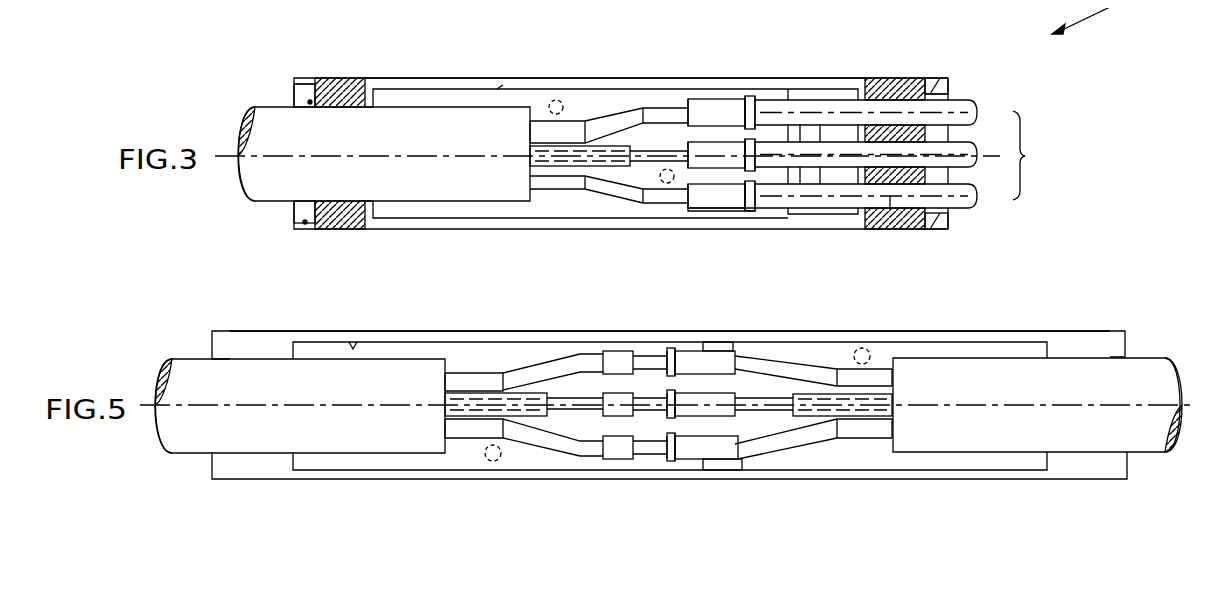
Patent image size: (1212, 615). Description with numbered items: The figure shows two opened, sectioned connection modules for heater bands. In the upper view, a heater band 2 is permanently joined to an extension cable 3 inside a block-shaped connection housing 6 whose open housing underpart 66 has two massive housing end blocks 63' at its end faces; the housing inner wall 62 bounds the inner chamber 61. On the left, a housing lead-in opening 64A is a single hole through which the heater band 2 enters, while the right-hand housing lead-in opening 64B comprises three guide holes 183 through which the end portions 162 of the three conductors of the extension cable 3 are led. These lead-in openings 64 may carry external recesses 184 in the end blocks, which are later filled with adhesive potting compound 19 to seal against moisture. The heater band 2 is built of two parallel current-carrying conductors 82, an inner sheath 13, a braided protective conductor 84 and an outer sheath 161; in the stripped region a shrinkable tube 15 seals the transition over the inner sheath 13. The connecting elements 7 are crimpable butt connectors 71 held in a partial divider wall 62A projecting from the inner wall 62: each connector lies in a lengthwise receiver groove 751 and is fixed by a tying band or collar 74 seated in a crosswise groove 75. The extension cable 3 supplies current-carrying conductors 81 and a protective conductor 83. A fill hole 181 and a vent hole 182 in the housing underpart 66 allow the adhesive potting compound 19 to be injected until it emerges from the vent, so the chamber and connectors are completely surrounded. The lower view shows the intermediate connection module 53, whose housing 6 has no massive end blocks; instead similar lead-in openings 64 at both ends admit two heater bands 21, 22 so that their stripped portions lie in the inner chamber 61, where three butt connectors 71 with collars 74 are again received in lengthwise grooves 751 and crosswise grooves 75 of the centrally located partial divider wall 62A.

In FIG. 3, the heater band 2 is at (410, 178).
In FIG. 3, the extension cable 3 is at (1028, 155).
In FIG. 3, the connection housing 6 is at (495, 230).
In FIG. 5, the connection housing 6 is at (973, 477).
In FIG. 3, the connecting element 7 is at (705, 208).
In FIG. 3, the inner sheath 13 is at (573, 120).
In FIG. 5, the inner sheath 13 is at (880, 378).
In FIG. 3, the shrinkable tube 15 is at (553, 160).
In FIG. 5, the shrinkable tube 15 is at (807, 402).
In FIG. 3, the adhesive potting compound 19 is at (530, 130).
In FIG. 5, the adhesive potting compound 19 is at (470, 355).
In FIG. 5, the heater band 21 is at (345, 425).
In FIG. 5, the heater band 22 is at (1017, 423).
In FIG. 5, the connection module 53 is at (1107, 287).
In FIG. 3, the inner chamber 61 is at (398, 92).
In FIG. 5, the inner chamber 61 is at (508, 355).
In FIG. 3, the housing inner wall 62 is at (499, 88).
In FIG. 5, the housing inner wall 62 is at (353, 342).
In FIG. 3, the partial divider wall 62A is at (743, 128).
In FIG. 5, the partial divider wall 62A is at (677, 472).
In FIG. 3, the housing end block 63' is at (631, 135).
In FIG. 5, the housing lead-in opening 64 is at (212, 357).
In FIG. 3, the housing lead-in opening 64A is at (298, 95).
In FIG. 3, the housing lead-in opening 64B is at (950, 90).
In FIG. 3, the housing underpart 66 is at (467, 77).
In FIG. 5, the housing underpart 66 is at (317, 332).
In FIG. 3, the butt connector 71 is at (718, 135).
In FIG. 5, the butt connector 71 is at (635, 365).
In FIG. 3, the tying band 74 is at (752, 172).
In FIG. 5, the tying band 74 is at (680, 462).
In FIG. 3, the crosswise groove 75 is at (750, 170).
In FIG. 5, the crosswise groove 75 is at (668, 410).
In FIG. 3, the current-carrying conductor 81 is at (826, 215).
In FIG. 3, the conductor 82 is at (614, 192).
In FIG. 5, the conductor 82 is at (532, 372).
In FIG. 3, the protective electrical conductor 83 is at (800, 205).
In FIG. 3, the protective conductor 84 is at (654, 150).
In FIG. 5, the protective conductor 84 is at (572, 410).
In FIG. 3, the outer sheath 161 is at (280, 170).
In FIG. 5, the outer sheath 161 is at (215, 428).
In FIG. 3, the end portion 162 is at (942, 198).
In FIG. 3, the fill hole 181 is at (662, 182).
In FIG. 5, the fill hole 181 is at (862, 347).
In FIG. 3, the vent hole 182 is at (556, 98).
In FIG. 5, the vent hole 182 is at (498, 460).
In FIG. 3, the guide hole 183 is at (890, 197).
In FIG. 3, the external recess 184 is at (308, 98).
In FIG. 3, the receiver groove 751 is at (745, 140).
In FIG. 5, the receiver groove 751 is at (660, 478).